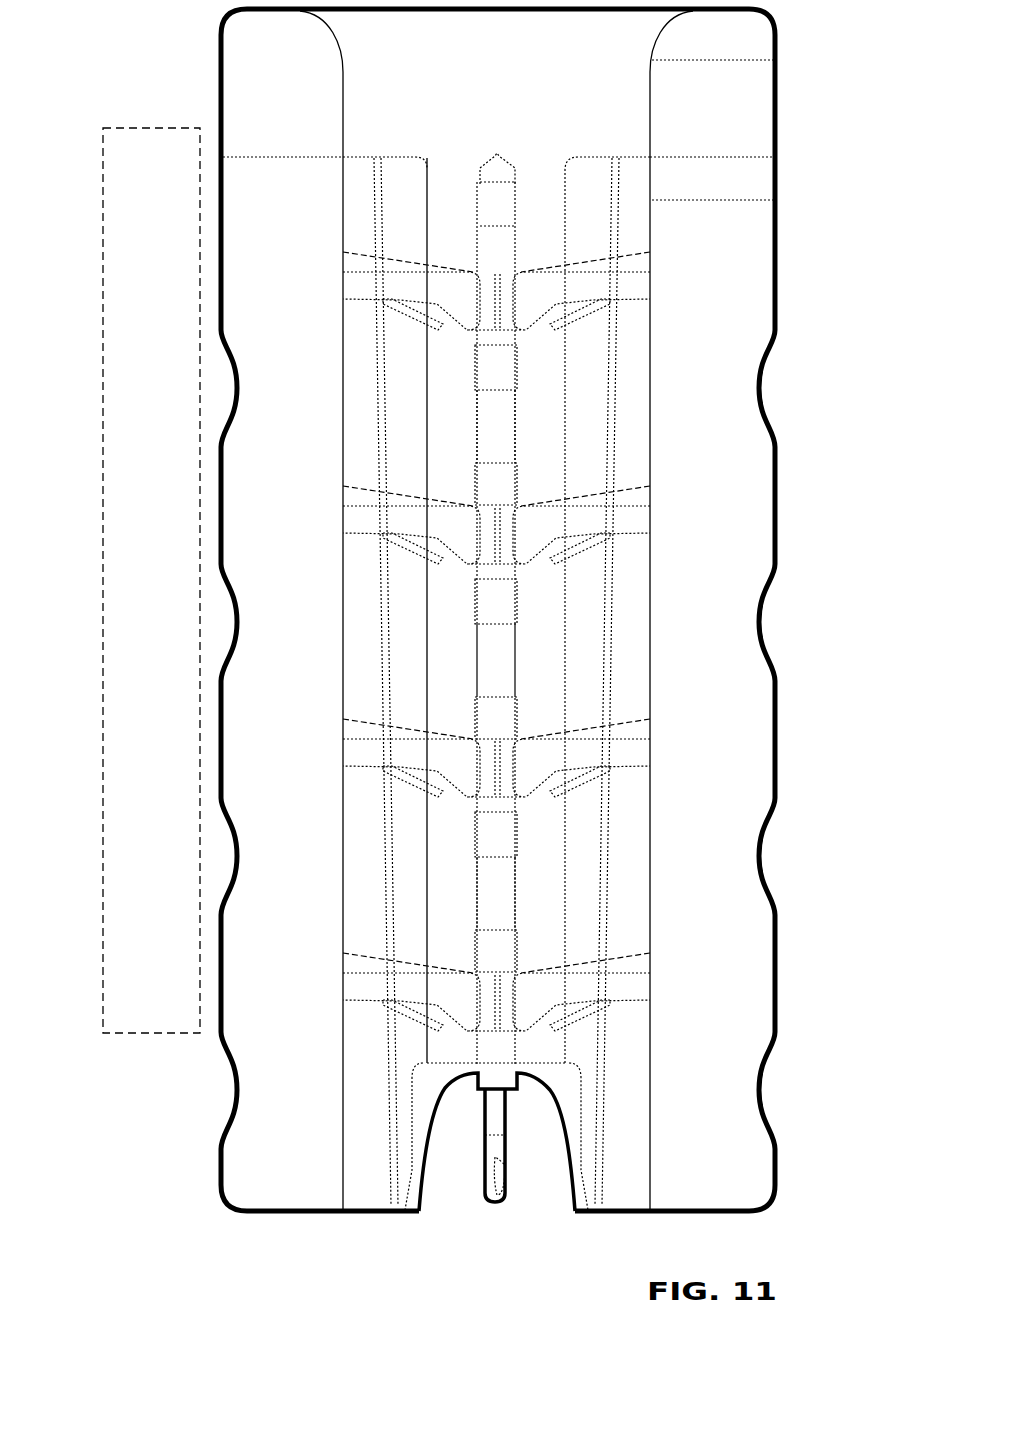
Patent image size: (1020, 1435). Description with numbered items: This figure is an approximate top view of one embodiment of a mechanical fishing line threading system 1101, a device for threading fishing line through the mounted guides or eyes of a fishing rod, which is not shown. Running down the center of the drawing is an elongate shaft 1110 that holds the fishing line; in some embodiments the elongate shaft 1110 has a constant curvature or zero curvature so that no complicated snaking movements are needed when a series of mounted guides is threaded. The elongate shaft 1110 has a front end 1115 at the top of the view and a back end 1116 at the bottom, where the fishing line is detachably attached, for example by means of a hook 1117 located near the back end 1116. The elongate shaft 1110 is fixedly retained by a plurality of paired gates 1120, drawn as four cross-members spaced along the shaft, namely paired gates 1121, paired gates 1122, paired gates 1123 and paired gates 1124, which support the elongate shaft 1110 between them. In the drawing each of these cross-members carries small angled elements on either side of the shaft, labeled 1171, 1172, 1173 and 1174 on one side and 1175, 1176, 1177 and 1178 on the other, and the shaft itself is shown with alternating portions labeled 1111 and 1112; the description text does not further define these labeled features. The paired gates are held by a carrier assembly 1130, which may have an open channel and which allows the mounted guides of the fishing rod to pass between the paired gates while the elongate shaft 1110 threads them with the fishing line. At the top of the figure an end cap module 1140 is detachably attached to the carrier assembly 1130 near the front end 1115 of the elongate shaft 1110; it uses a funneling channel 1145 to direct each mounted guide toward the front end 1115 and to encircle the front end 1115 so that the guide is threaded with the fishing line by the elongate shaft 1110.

The mechanical fishing line threading system 1101 is at (152, 1208).
The elongate shaft 1110 is at (515, 421).
The column narrow segment 1111 is at (503, 655).
The column wide segment 1112 is at (485, 608).
The front end 1115 is at (486, 158).
The back end 1116 is at (507, 1073).
The hook 1117 is at (507, 1122).
The plurality of paired gates 1120 is at (181, 180).
The paired gates 1121 is at (365, 291).
The paired gates 1122 is at (365, 524).
The paired gates 1123 is at (365, 759).
The paired gates 1124 is at (365, 993).
The carrier assembly 1130 is at (742, 245).
The end cap module 1140 is at (742, 113).
The funneling channel 1145 is at (517, 112).
The first left strut 1171 is at (405, 321).
The second left strut 1172 is at (413, 552).
The third left strut 1173 is at (405, 788).
The fourth left strut 1174 is at (405, 1022).
The fourth right strut 1175 is at (583, 1017).
The third right strut 1176 is at (583, 781).
The second right strut 1177 is at (583, 548).
The first right strut 1178 is at (586, 317).